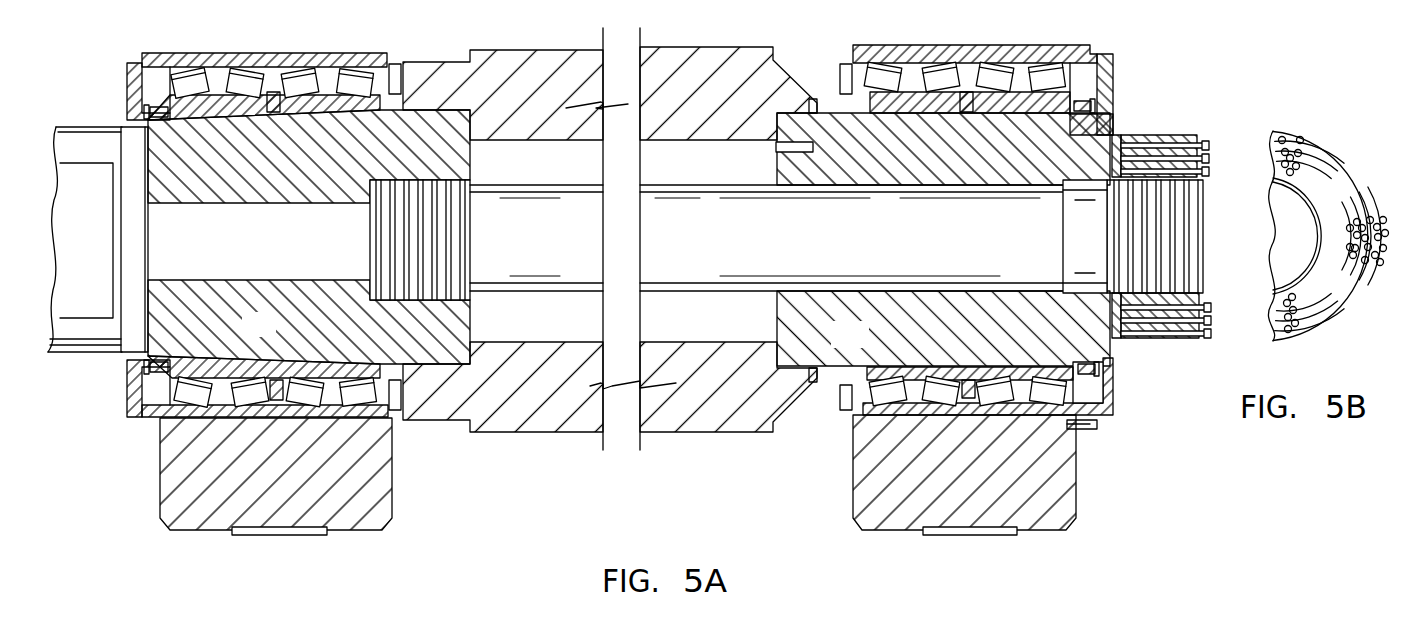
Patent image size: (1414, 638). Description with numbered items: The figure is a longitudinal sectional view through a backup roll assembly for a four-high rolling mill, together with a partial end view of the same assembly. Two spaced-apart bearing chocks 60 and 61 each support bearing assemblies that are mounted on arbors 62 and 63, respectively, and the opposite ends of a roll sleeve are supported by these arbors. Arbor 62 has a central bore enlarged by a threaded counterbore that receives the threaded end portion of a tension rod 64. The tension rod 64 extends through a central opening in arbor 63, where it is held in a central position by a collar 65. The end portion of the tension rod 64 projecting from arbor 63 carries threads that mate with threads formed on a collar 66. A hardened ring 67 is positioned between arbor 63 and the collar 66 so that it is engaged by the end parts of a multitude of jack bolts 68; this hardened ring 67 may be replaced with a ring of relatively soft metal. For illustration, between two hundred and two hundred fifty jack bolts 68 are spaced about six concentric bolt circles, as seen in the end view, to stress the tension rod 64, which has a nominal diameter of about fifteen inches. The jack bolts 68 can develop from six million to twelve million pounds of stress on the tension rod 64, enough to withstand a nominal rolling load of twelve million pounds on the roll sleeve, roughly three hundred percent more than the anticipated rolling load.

The bearing chock 60 is at (160, 467).
The bearing chock 61 is at (1076, 477).
The arbor 62 is at (271, 335).
The arbor 63 is at (861, 345).
The tension rod 64 is at (710, 244).
The collar 65 is at (1096, 243).
The collar 66 is at (1158, 135).
The hardened ring 67 is at (1118, 339).
The jack bolts 68 is at (1211, 160).